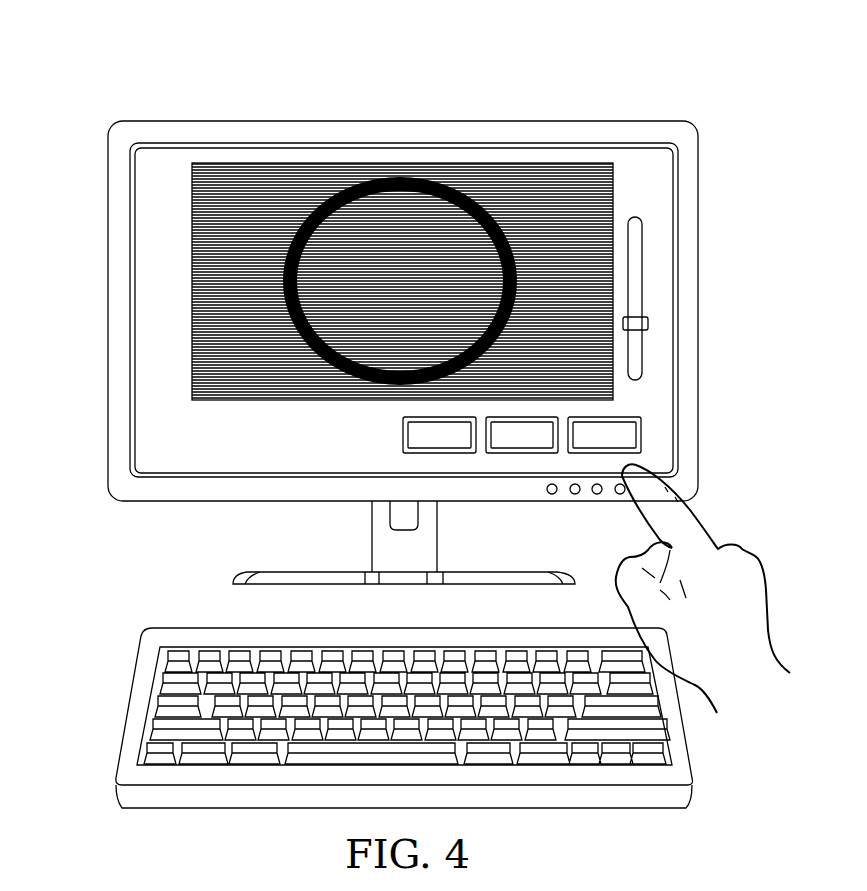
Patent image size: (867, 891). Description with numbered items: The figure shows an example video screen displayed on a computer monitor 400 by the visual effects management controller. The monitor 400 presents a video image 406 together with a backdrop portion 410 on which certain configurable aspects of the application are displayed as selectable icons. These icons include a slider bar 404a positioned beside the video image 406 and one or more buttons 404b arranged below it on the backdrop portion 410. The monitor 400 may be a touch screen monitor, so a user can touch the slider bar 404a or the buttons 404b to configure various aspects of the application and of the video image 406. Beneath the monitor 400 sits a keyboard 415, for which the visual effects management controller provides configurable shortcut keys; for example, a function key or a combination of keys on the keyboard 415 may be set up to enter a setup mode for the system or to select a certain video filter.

The computer monitor 400 is at (238, 85).
The video image 406 is at (190, 282).
The backdrop portion 410 is at (148, 350).
The slider bar 404a is at (642, 292).
The buttons 404b is at (392, 432).
The keyboard 415 is at (125, 708).